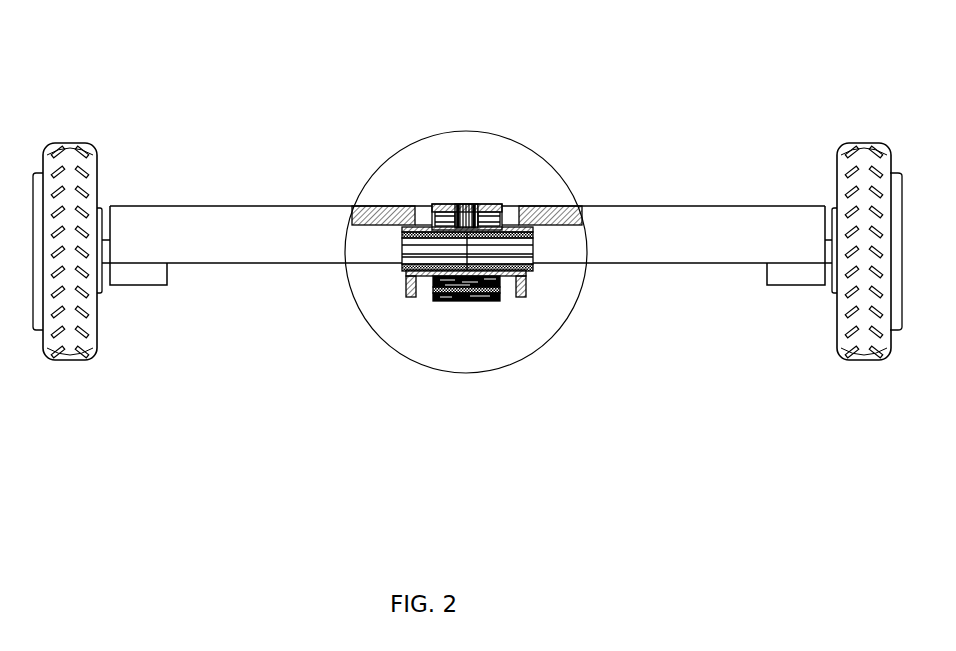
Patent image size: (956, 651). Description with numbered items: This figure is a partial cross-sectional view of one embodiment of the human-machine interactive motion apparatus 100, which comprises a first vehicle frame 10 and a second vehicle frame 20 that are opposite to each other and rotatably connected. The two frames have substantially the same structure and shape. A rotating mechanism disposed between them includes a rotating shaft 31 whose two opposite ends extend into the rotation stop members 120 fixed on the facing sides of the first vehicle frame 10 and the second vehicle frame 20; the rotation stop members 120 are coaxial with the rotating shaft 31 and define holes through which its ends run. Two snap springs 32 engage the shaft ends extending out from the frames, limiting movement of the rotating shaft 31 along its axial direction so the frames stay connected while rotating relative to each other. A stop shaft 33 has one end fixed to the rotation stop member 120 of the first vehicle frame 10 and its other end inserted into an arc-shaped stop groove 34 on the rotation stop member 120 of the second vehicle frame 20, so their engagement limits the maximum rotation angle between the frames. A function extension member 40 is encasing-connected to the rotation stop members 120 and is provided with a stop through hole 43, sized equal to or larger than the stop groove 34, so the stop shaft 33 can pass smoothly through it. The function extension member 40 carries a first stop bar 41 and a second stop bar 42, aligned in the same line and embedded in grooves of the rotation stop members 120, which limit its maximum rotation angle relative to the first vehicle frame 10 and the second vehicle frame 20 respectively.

The human-machine interactive motion apparatus 100 is at (520, 48).
The first vehicle frame 10 is at (217, 237).
The second vehicle frame 20 is at (673, 233).
The rotation stop member 120 is at (473, 205).
The function extension member 40 is at (464, 153).
The first stop bar 41 is at (442, 220).
The second stop bar 42 is at (490, 220).
The rotating shaft 31 is at (477, 255).
The snap spring 32 is at (405, 272).
The stop shaft 33 is at (432, 288).
The stop groove 34 is at (499, 290).
The stop through hole 43 is at (453, 297).